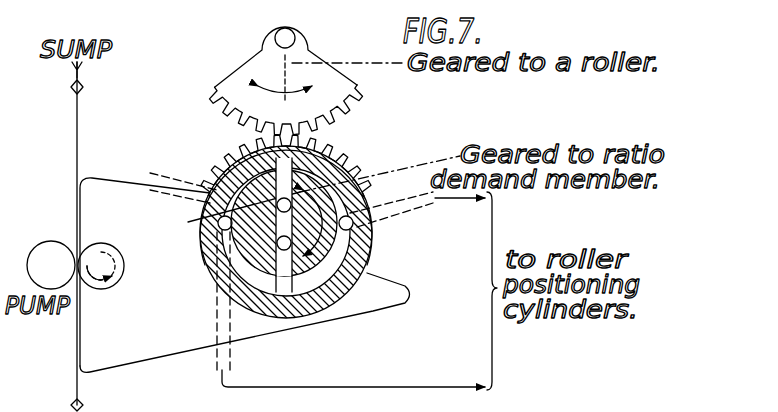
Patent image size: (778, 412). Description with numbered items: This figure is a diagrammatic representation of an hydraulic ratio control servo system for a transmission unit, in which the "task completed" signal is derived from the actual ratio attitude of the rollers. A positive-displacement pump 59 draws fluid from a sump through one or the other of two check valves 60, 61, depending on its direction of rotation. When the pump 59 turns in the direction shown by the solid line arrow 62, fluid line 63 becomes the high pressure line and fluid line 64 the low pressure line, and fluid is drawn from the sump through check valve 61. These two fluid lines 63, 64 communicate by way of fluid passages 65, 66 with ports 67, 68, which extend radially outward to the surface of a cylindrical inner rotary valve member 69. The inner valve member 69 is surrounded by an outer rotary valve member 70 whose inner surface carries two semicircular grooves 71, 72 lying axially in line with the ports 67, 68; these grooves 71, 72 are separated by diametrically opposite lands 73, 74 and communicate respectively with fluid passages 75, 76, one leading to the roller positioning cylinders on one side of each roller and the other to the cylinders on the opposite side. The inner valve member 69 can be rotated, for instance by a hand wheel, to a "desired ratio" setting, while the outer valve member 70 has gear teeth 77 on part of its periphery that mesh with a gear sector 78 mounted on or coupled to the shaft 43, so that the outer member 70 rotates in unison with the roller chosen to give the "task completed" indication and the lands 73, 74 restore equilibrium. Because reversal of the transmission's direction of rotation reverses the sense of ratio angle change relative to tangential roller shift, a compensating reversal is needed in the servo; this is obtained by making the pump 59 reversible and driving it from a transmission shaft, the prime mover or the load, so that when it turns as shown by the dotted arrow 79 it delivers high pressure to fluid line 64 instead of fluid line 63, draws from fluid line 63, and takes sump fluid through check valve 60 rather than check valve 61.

The shaft 43 is at (295, 40).
The positive-displacement pump 59 is at (115, 290).
The check valve 60 is at (83, 83).
The check valve 61 is at (84, 406).
The solid line arrow 62 is at (106, 250).
The fluid line 63 is at (118, 179).
The fluid line 64 is at (134, 364).
The fluid passage 65 is at (200, 186).
The fluid passage 66 is at (360, 270).
The port 67 is at (260, 165).
The port 68 is at (278, 268).
The inner rotary valve member 69 is at (262, 256).
The outer rotary valve member 70 is at (290, 290).
The semicircular groove 71 is at (252, 165).
The semicircular groove 72 is at (355, 175).
The land 73 is at (297, 166).
The land 74 is at (280, 312).
The fluid passage 75 is at (217, 333).
The fluid passage 76 is at (406, 218).
The gear teeth 77 is at (325, 165).
The gear sector 78 is at (250, 66).
The dotted arrow 79 is at (110, 280).